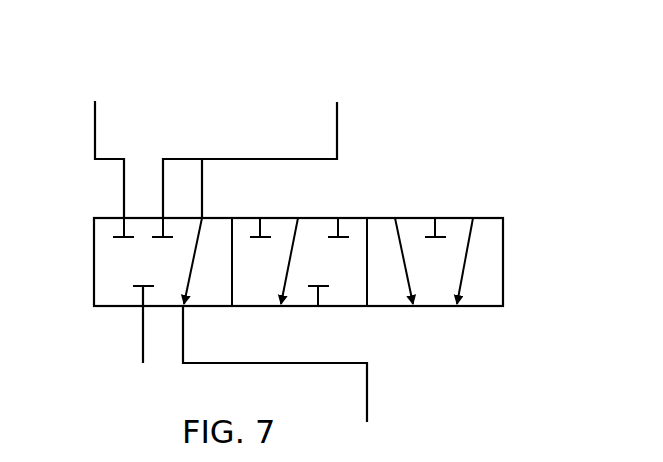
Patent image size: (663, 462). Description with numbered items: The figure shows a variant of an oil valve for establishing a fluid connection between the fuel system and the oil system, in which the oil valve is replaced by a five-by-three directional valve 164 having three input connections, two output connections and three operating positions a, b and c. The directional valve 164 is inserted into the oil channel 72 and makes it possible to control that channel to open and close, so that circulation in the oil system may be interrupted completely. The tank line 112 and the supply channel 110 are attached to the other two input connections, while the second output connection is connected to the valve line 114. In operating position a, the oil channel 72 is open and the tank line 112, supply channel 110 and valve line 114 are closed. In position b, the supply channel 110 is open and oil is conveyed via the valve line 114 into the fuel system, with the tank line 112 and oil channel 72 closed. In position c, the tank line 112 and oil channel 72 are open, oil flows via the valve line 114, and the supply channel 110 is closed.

The 5/3 directional valve 164 is at (457, 99).
The tank line 112 is at (94, 131).
The supply channel 110 is at (338, 131).
The valve line 114 is at (142, 335).
The oil channel 72 is at (368, 392).